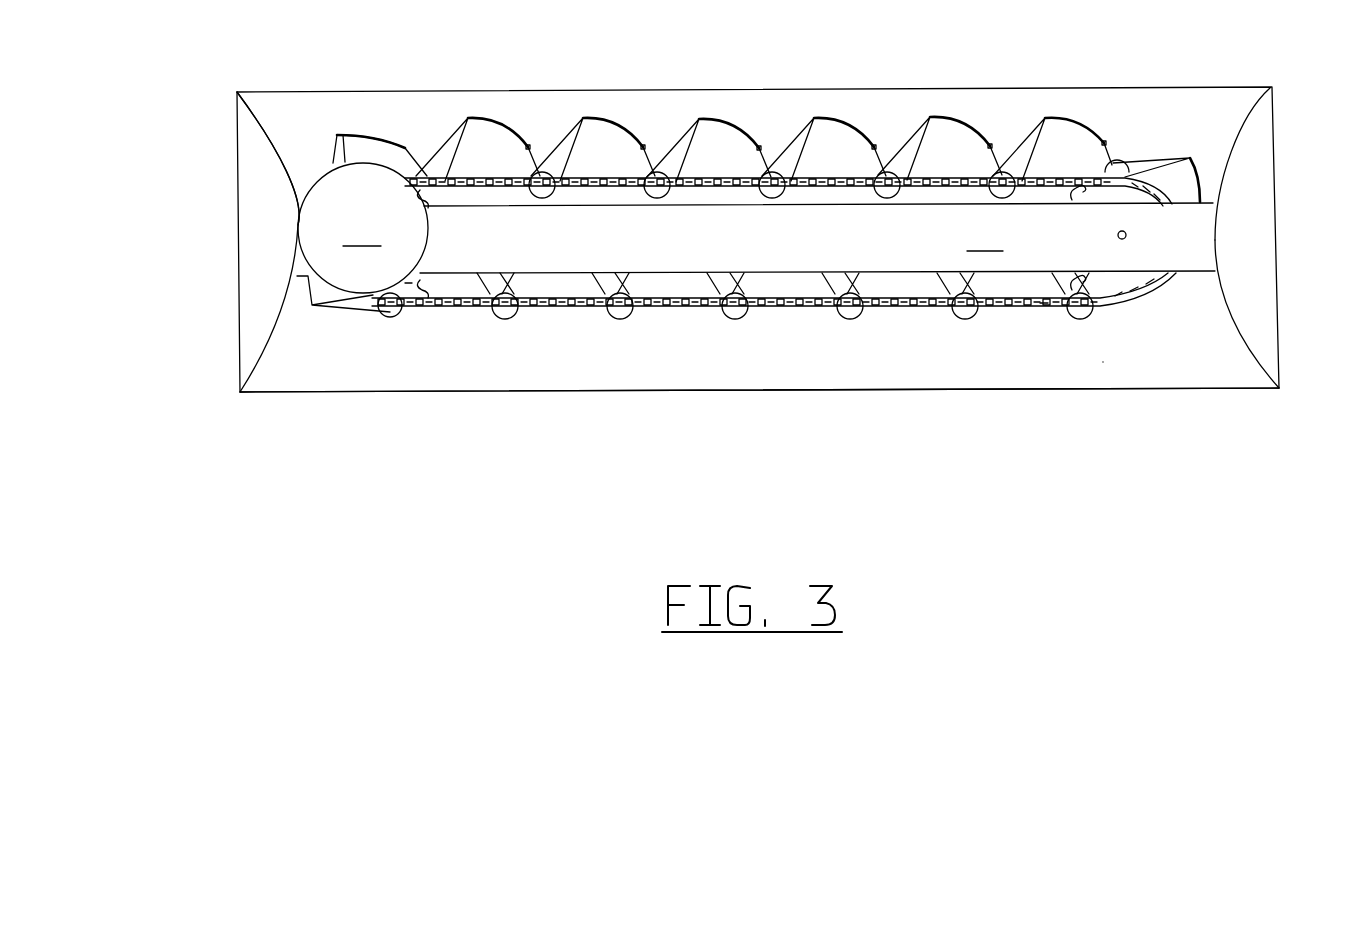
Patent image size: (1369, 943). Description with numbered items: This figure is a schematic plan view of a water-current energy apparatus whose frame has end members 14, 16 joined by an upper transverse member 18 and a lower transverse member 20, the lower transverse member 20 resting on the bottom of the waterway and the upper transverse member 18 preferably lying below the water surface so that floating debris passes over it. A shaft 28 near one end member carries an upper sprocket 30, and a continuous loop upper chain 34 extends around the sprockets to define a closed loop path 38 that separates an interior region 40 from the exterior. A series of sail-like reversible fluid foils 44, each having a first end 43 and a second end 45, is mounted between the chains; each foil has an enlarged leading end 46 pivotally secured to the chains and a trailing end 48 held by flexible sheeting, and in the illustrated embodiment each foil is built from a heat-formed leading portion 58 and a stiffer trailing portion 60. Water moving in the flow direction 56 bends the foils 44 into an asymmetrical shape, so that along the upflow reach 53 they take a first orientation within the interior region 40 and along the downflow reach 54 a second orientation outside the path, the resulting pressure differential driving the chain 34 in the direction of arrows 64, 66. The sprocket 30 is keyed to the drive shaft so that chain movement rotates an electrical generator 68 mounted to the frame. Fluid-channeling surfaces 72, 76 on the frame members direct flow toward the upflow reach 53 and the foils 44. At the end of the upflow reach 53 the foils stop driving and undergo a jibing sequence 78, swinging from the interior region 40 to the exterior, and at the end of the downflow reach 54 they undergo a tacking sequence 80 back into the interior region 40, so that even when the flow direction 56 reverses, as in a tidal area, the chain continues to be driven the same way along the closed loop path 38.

The end member 14 is at (1278, 210).
The end member 16 is at (257, 318).
The upper transverse member 18 is at (817, 363).
The lower transverse member 20 is at (1208, 387).
The shaft 28 is at (1125, 242).
The upper sprocket 30 is at (412, 283).
The upper chain 34 is at (668, 308).
The closed loop path 38 is at (832, 177).
The interior region 40 is at (703, 250).
The first end 43 is at (500, 135).
The reversible fluid foil 44 is at (600, 137).
The second end 45 is at (510, 137).
The leading end 46 is at (953, 300).
The trailing end 48 is at (814, 118).
The upflow reach 53 is at (1045, 303).
The downflow reach 54 is at (948, 175).
The flow direction arrow 56 is at (777, 340).
The leading portion 58 is at (1113, 163).
The trailing portion 60 is at (1073, 120).
The arrow 64 is at (497, 351).
The arrow 66 is at (932, 102).
The electrical generator 68 is at (363, 228).
The fluid-channeling surface 72 is at (265, 358).
The fluid-channeling surface 76 is at (1103, 362).
The jibing sequence 78 is at (293, 125).
The tacking sequence 80 is at (1210, 138).